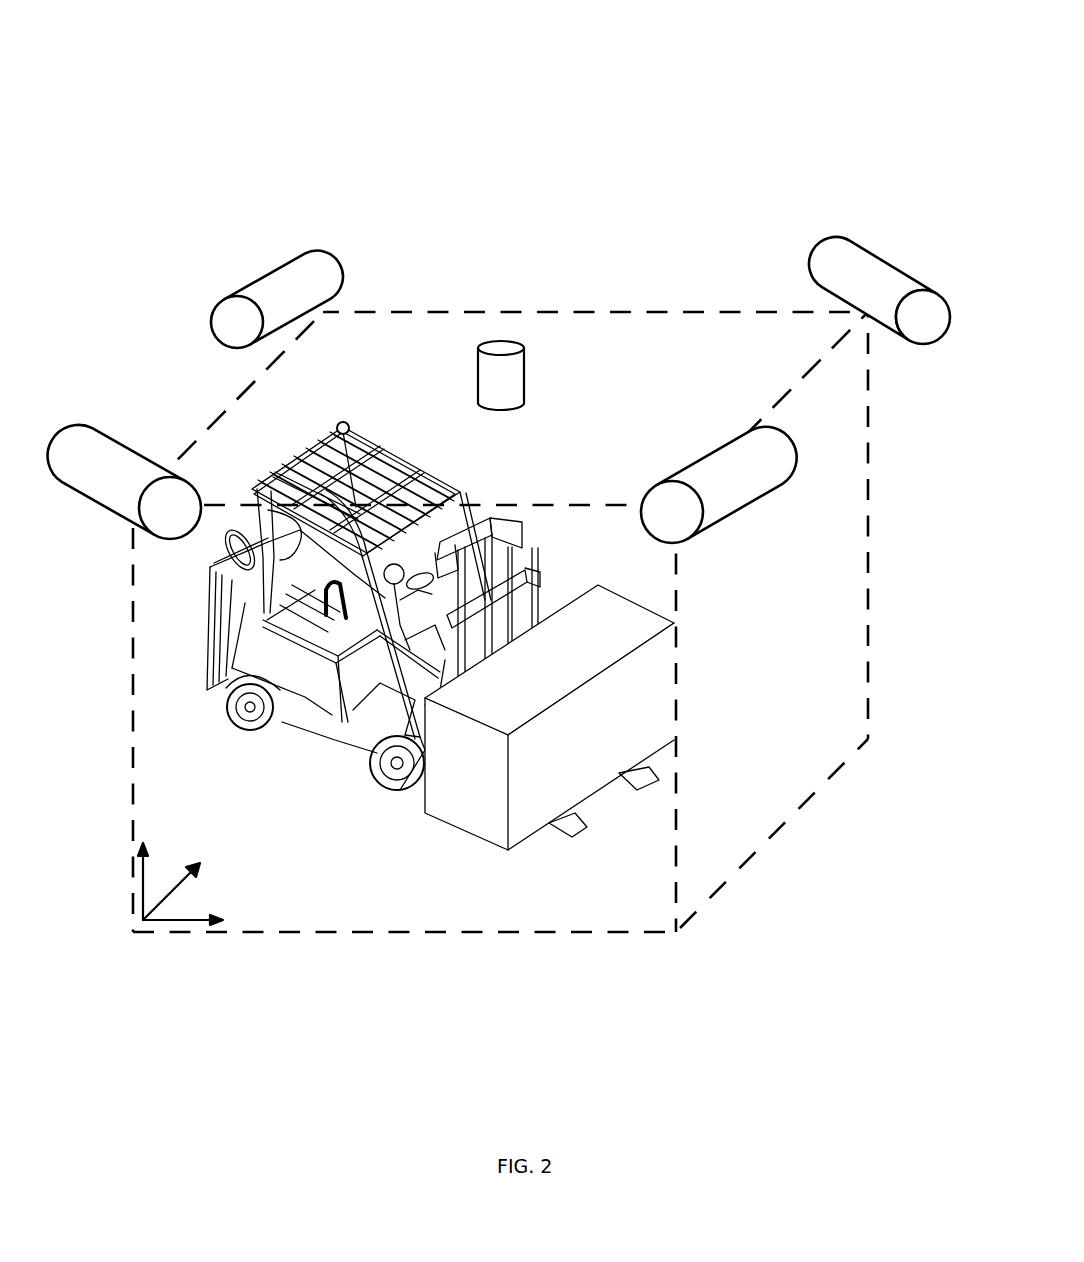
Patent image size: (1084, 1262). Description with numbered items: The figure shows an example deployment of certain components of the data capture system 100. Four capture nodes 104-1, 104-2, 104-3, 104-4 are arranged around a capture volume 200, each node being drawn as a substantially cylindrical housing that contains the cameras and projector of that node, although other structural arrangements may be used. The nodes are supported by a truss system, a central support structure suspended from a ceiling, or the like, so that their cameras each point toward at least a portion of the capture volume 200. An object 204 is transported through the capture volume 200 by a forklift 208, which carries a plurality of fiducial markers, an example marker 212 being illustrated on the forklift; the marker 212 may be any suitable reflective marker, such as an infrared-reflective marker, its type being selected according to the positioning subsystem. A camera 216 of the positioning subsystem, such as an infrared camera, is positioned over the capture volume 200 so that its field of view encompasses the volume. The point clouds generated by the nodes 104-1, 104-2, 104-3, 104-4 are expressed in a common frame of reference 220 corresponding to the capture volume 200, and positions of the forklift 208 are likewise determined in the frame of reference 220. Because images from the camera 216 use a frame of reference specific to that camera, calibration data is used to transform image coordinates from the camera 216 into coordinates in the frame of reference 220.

The system 100 is at (702, 78).
The capture node 104-1 is at (299, 241).
The capture node 104-2 is at (95, 408).
The capture node 104-3 is at (731, 535).
The capture node 104-4 is at (906, 260).
The capture volume 200 is at (780, 827).
The object 204 is at (472, 800).
The forklift 208 is at (222, 695).
The marker 212 is at (343, 421).
The camera 216 is at (527, 378).
The frame of reference 220 is at (160, 926).